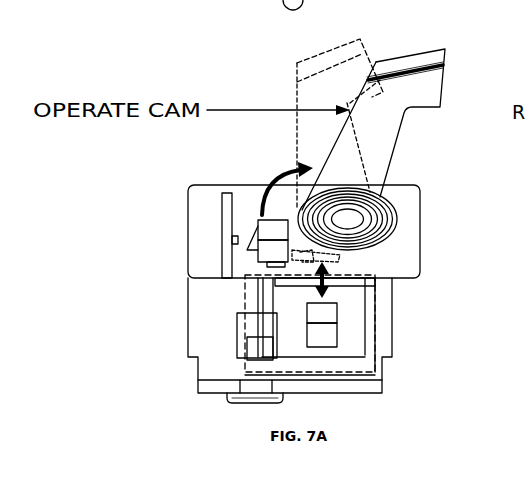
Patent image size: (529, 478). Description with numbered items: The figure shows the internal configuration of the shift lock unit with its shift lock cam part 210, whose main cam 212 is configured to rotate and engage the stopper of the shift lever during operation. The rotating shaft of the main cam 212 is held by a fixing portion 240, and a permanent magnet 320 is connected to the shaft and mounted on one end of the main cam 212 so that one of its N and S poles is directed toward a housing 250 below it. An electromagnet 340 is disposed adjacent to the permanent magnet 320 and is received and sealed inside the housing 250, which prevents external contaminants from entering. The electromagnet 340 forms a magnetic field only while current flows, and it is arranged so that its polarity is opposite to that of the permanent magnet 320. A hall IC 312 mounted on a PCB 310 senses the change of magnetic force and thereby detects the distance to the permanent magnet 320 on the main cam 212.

The shift lock cam part 210 is at (272, 68).
The main cam 212 is at (328, 53).
The fixing portion 240 is at (188, 258).
The housing 250 is at (188, 313).
The PCB 310 is at (222, 210).
The hall IC 312 is at (232, 239).
The permanent magnet 320 is at (258, 222).
The electromagnet 340 is at (337, 320).